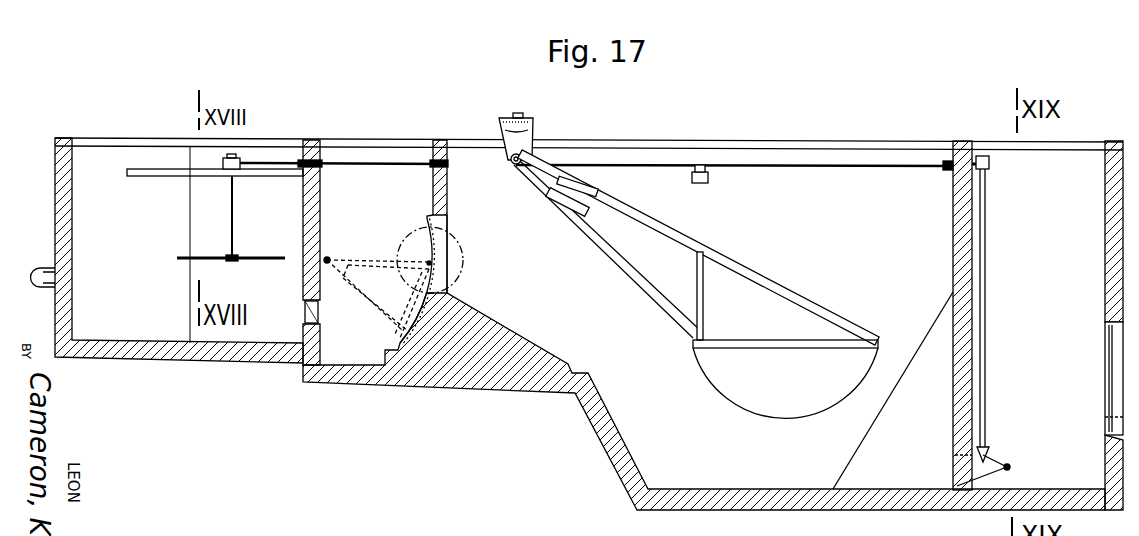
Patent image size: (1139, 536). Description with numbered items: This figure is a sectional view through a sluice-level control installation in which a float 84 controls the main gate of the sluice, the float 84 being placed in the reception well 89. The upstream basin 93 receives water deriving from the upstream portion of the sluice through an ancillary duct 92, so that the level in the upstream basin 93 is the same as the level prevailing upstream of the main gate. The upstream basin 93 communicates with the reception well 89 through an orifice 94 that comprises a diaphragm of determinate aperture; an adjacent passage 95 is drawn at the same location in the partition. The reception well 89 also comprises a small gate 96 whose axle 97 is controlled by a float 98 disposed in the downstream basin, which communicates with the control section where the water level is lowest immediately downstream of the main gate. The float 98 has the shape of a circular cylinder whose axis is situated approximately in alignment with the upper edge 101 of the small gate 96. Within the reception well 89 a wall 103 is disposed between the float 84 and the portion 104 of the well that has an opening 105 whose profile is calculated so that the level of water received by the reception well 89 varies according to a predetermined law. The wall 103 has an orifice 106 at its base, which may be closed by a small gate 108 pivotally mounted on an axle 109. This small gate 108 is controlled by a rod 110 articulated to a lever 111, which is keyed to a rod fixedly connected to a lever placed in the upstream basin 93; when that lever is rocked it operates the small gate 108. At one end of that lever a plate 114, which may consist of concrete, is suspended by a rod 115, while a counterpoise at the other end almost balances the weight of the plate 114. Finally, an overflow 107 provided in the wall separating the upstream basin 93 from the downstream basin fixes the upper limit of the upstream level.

The float 84 is at (747, 397).
The reception well 89 is at (785, 178).
The ancillary duct 92 is at (50, 268).
The upstream basin 93 is at (137, 157).
The orifice 94 is at (315, 308).
The opening 95 is at (303, 312).
The small gate 96 is at (432, 278).
The axle 97 is at (328, 258).
The float 98 is at (450, 238).
The upper edge 101 is at (433, 263).
The wall 103 is at (953, 218).
The portion of the well 104 is at (1073, 172).
The opening 105 is at (1107, 373).
The orifice 106 is at (953, 466).
The overflow 107 is at (312, 180).
The small gate 108 is at (977, 452).
The axle 109 is at (1008, 466).
The rod 110 is at (986, 298).
The lever 111 is at (989, 162).
The plate 114 is at (252, 257).
The rod 115 is at (234, 201).